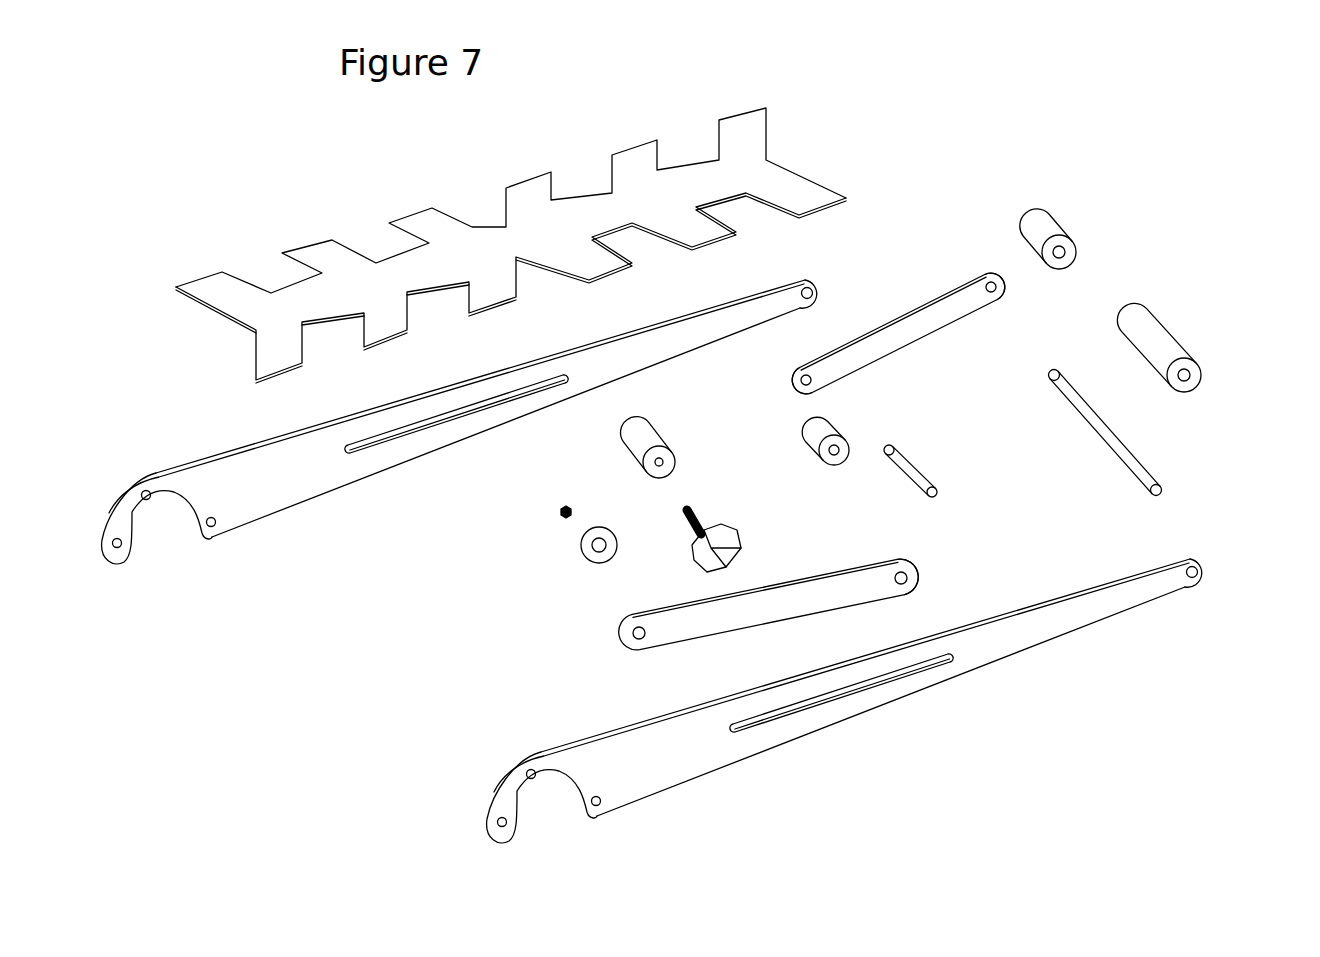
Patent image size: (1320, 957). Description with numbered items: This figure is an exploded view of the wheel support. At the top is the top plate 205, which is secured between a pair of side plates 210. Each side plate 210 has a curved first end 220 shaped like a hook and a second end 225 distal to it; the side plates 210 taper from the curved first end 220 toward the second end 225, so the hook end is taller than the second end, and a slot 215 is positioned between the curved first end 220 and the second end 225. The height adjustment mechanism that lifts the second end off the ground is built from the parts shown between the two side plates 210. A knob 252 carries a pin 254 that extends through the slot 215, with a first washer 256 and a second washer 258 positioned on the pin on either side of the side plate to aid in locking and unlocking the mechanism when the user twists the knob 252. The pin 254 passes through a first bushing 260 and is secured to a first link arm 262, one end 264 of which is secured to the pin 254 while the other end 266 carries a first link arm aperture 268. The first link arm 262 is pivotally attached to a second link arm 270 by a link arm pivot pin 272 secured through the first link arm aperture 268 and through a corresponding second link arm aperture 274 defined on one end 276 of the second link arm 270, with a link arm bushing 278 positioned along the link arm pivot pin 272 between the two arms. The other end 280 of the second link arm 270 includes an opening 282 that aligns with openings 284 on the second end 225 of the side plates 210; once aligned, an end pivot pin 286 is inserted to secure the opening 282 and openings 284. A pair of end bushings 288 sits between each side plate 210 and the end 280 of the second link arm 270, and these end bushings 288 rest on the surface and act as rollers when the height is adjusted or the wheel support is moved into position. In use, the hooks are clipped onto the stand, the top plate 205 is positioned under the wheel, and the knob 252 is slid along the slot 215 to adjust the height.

The top plate 205 is at (762, 130).
The side plate 210 is at (690, 561).
The slot 215 is at (493, 393).
The curved first end 220 is at (123, 500).
The second end 225 is at (767, 292).
The knob 252 is at (735, 542).
The pin 254 is at (697, 510).
The first washer 256 is at (588, 557).
The second washer 258 is at (562, 513).
The first bushing 260 is at (650, 432).
The first link arm 262 is at (768, 622).
The end of first link arm 264 is at (615, 645).
The other end of first link arm 266 is at (913, 562).
The first link arm aperture 268 is at (910, 583).
The second link arm 270 is at (901, 313).
The link arm pivot pin 272 is at (912, 463).
The second link arm aperture 274 is at (810, 380).
The end of second link arm 276 is at (810, 366).
The link arm bushing 278 is at (827, 425).
The other end of second link arm 280 is at (980, 273).
The opening 282 is at (998, 289).
The openings 284 is at (810, 292).
The end pivot pin 286 is at (1103, 423).
The end bushings 288 is at (1053, 222).